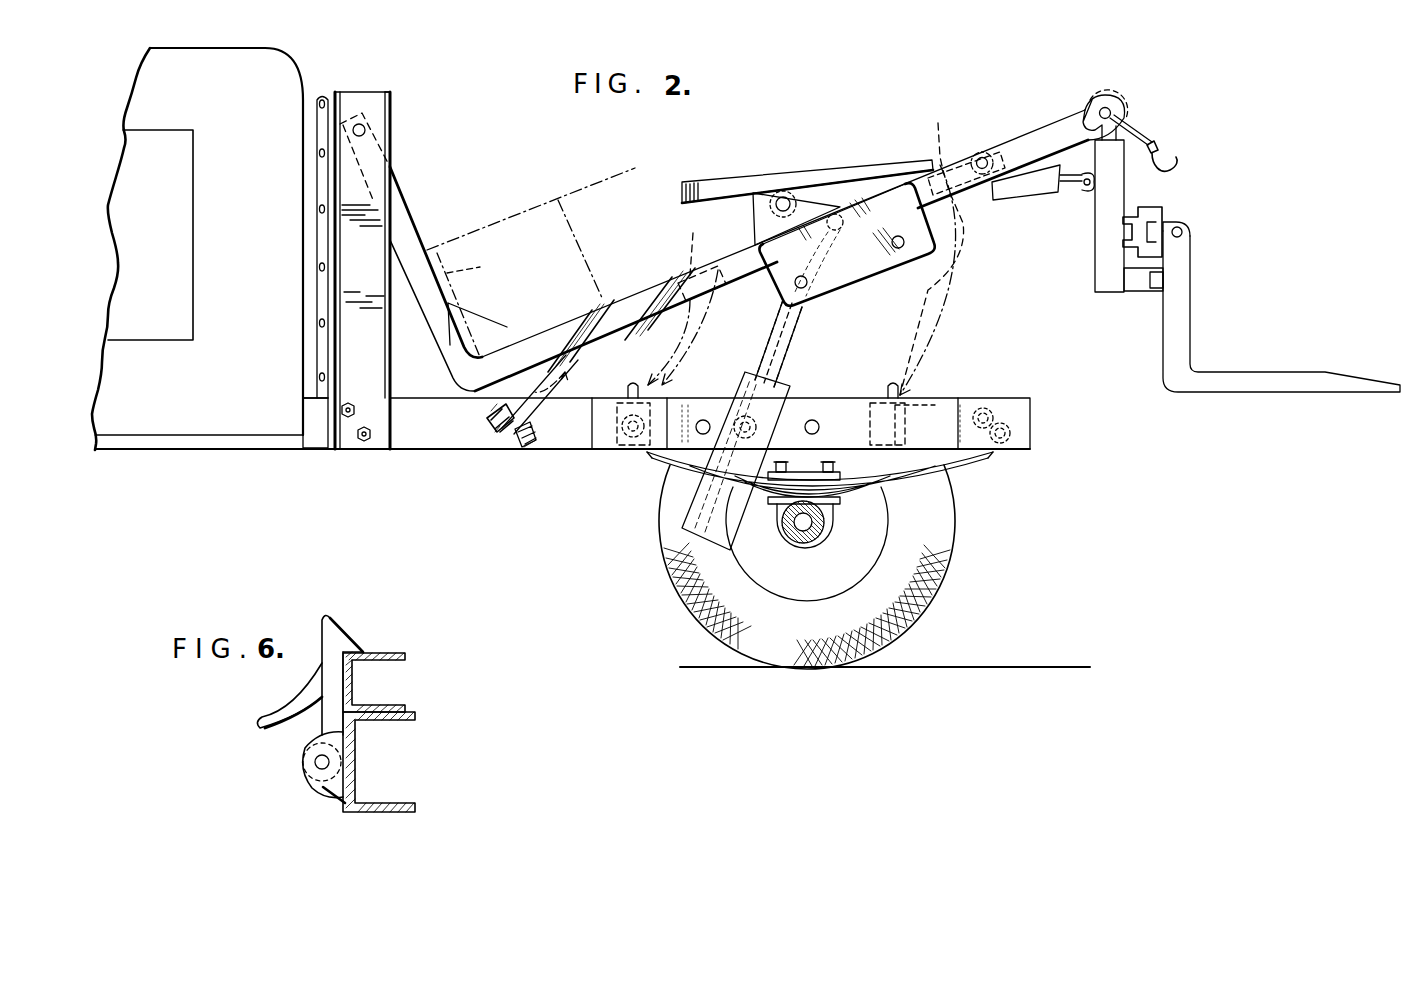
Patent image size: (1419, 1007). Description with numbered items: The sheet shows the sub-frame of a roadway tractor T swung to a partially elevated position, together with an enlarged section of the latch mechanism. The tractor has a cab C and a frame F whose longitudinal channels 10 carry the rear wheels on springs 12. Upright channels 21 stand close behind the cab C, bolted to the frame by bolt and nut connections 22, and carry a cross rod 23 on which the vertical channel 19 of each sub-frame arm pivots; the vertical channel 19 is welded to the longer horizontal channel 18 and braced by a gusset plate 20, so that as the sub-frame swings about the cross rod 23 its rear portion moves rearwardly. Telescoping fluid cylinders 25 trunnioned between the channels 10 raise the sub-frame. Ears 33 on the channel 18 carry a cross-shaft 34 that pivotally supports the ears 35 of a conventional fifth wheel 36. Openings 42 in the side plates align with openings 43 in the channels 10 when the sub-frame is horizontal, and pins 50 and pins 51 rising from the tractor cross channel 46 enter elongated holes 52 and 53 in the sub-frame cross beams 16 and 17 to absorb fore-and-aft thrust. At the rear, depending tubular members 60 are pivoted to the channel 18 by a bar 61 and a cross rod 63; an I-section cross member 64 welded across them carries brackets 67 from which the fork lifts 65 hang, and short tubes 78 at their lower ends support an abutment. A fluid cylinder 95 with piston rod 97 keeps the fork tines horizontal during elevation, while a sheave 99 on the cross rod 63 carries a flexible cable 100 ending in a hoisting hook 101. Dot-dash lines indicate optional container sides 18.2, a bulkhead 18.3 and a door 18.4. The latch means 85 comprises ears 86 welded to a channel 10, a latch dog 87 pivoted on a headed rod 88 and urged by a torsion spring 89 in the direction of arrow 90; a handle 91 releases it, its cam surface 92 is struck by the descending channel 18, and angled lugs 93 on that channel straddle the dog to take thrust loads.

In FIG. 2, the cab C is at (275, 47).
In FIG. 2, the frame F is at (303, 452).
In FIG. 2, the roadway tractor T is at (193, 478).
In FIG. 2, the frame members 10 is at (418, 450).
In FIG. 6, the frame members 10 is at (405, 718).
In FIG. 2, the springs 12 is at (978, 456).
In FIG. 2, the cross beam 16 is at (694, 252).
In FIG. 2, the cross beam 17 is at (932, 250).
In FIG. 2, the horizontally disposed channel 18 is at (1022, 135).
In FIG. 6, the horizontally disposed channel 18 is at (408, 657).
In FIG. 2, the sides 18.2 is at (598, 196).
In FIG. 2, the bulkhead 18.3 is at (494, 269).
In FIG. 2, the door 18.4 is at (512, 205).
In FIG. 2, the vertically disposed channel 19 is at (402, 212).
In FIG. 2, the gusset plate 20 is at (470, 342).
In FIG. 2, the upright channels 21 is at (392, 120).
In FIG. 2, the bolt and nut connections 22 is at (362, 445).
In FIG. 2, the cross rod 23 is at (362, 126).
In FIG. 2, the fluid cylinders 25 is at (700, 530).
In FIG. 2, the ears 33 is at (765, 235).
In FIG. 2, the cross-shaft 34 is at (790, 197).
In FIG. 2, the ears 35 is at (760, 198).
In FIG. 2, the fifth wheel 36 is at (700, 185).
In FIG. 2, the openings 42 is at (797, 284).
In FIG. 2, the openings 43 is at (704, 418).
In FIG. 2, the cross channel 46 is at (940, 412).
In FIG. 2, the pins 50 is at (630, 392).
In FIG. 2, the pins 51 is at (905, 390).
In FIG. 2, the holes 52 is at (690, 300).
In FIG. 2, the holes 53 is at (975, 200).
In FIG. 2, the depending members 60 is at (1092, 281).
In FIG. 2, the bar 61 is at (1100, 107).
In FIG. 2, the cross rod 63 is at (1108, 100).
In FIG. 2, the cross member 64 is at (1148, 224).
In FIG. 2, the fork lifts 65 is at (1182, 327).
In FIG. 2, the brackets 67 is at (1170, 250).
In FIG. 2, the short metal tubes 78 is at (1133, 293).
In FIG. 2, the latch means 85 is at (490, 444).
In FIG. 6, the latch means 85 is at (370, 642).
In FIG. 2, the ears 86 is at (490, 424).
In FIG. 6, the ears 86 is at (333, 792).
In FIG. 2, the latch dog 87 is at (548, 395).
In FIG. 6, the latch dog 87 is at (322, 640).
In FIG. 6, the rod 88 is at (316, 765).
In FIG. 2, the torsion spring 89 is at (534, 450).
In FIG. 6, the arrow 90 is at (345, 590).
In FIG. 6, the handle 91 is at (258, 722).
In FIG. 6, the cam surface 92 is at (348, 640).
In FIG. 2, the lugs 93 is at (590, 340).
In FIG. 2, the fluid cylinder 95 is at (1037, 188).
In FIG. 2, the piston rod 97 is at (1060, 190).
In FIG. 2, the sheave 99 is at (1118, 100).
In FIG. 2, the flexible cable 100 is at (1135, 130).
In FIG. 2, the hoisting hook 101 is at (1180, 162).